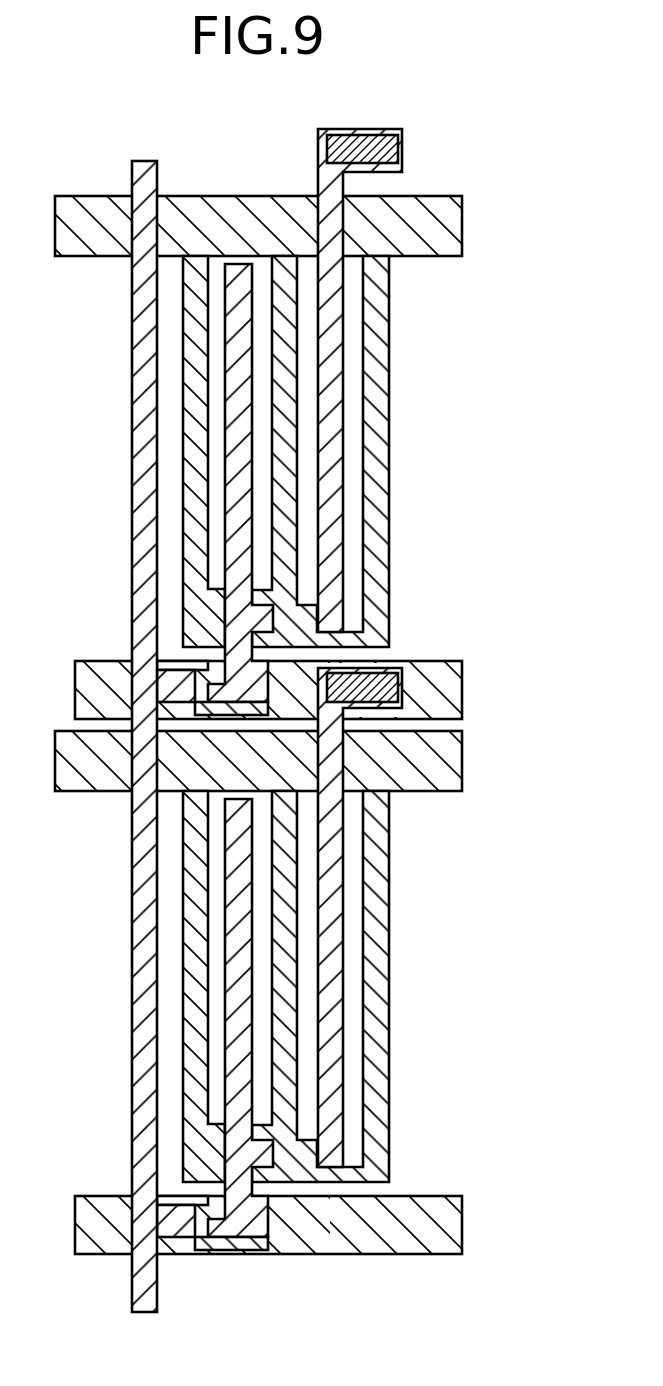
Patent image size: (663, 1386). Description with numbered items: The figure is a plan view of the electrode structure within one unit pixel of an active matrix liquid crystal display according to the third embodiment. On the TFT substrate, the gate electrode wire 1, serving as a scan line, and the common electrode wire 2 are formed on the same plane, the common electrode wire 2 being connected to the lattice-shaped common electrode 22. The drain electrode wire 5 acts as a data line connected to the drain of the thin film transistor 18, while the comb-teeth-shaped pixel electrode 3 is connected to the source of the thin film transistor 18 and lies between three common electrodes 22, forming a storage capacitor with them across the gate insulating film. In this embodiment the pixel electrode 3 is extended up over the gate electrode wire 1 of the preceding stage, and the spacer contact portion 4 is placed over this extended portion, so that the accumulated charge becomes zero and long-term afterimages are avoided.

The gate electrode wire 1 is at (452, 688).
The common electrode wire 2 is at (452, 227).
The pixel electrode 3 is at (330, 340).
The spacer contact portion 4 is at (400, 132).
The drain electrode wire 5 is at (138, 541).
The thin film transistor 18 is at (228, 1253).
The common electrode 22 is at (378, 553).